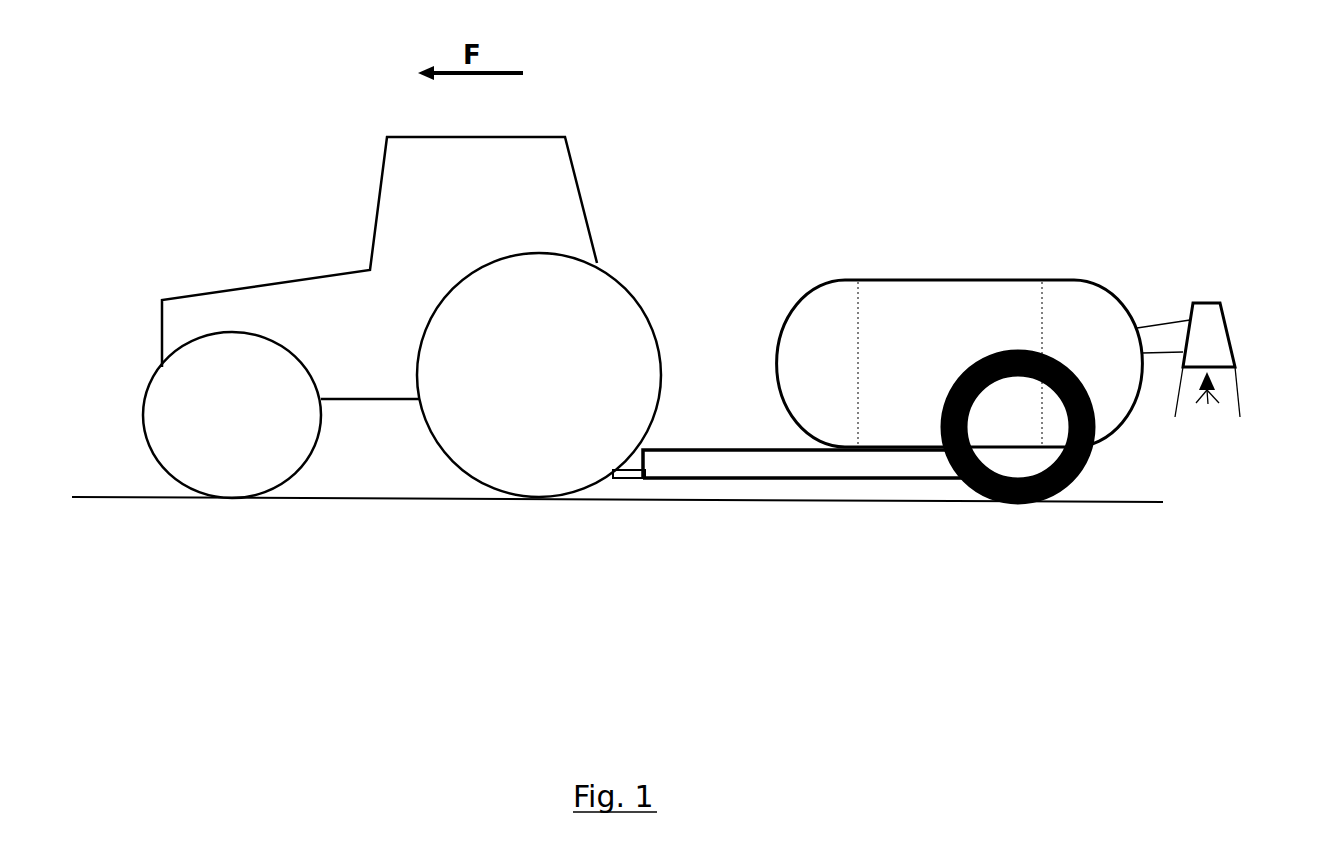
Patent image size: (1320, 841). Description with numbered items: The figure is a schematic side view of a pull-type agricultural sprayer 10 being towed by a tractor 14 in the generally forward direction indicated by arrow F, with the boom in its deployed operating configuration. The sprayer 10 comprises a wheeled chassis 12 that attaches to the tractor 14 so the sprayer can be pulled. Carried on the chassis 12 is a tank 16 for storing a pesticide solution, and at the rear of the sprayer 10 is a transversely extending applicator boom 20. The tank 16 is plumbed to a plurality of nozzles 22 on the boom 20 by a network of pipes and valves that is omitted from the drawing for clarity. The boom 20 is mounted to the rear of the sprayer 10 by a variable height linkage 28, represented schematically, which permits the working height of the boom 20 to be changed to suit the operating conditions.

The pull-type agricultural sprayer 10 is at (1034, 330).
The wheeled chassis 12 is at (738, 462).
The tractor 14 is at (268, 180).
The tank 16 is at (897, 280).
The applicator boom 20 is at (1225, 310).
The nozzles 22 is at (1213, 381).
The variable height linkage 28 is at (1153, 318).